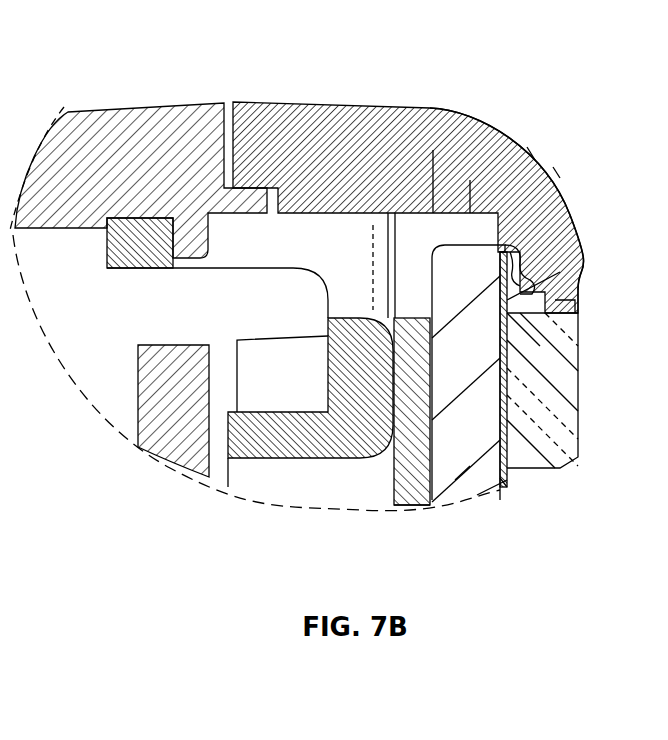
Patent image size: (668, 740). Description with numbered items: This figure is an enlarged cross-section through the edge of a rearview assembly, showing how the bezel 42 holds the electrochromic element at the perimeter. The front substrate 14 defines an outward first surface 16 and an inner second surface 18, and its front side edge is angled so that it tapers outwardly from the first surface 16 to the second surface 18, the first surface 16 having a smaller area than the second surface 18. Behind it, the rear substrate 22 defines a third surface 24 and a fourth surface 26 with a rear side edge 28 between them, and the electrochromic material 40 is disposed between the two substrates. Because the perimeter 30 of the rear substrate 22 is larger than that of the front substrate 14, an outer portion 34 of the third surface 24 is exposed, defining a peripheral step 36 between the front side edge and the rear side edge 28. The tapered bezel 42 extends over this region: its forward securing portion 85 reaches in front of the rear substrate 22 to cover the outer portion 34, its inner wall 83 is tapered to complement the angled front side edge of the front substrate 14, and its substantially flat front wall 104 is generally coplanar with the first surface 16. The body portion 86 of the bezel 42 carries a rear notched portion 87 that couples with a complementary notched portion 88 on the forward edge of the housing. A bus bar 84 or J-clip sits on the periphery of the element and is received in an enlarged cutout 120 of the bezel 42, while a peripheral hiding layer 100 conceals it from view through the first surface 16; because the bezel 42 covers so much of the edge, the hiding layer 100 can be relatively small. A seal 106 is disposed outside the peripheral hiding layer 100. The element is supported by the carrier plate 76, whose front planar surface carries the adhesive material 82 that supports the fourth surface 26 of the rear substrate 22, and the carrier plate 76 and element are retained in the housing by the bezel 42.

The front substrate 14 is at (540, 400).
The first surface 16 is at (575, 410).
The second surface 18 is at (560, 437).
The rear substrate 22 is at (463, 485).
The third surface 24 is at (502, 478).
The fourth surface 26 is at (408, 502).
The rear side edge 28 is at (433, 213).
The perimeter 30 is at (470, 213).
The outer portion 34 is at (505, 247).
The peripheral step 36 is at (540, 290).
The electrochromic material 40 is at (507, 462).
The bezel 42 is at (470, 118).
The carrier plate 76 is at (328, 460).
The adhesive material 82 is at (393, 470).
The inner wall 83 is at (548, 315).
The bus bar 84 is at (402, 213).
The forward securing portion 85 is at (527, 147).
The body portion 86 is at (318, 138).
The rear notched portion 87 is at (245, 200).
The complementary notched portion 88 is at (213, 233).
The peripheral hiding layer 100 is at (512, 338).
The front wall 104 is at (553, 167).
The seal 106 is at (540, 215).
The enlarged cutout 120 is at (510, 262).